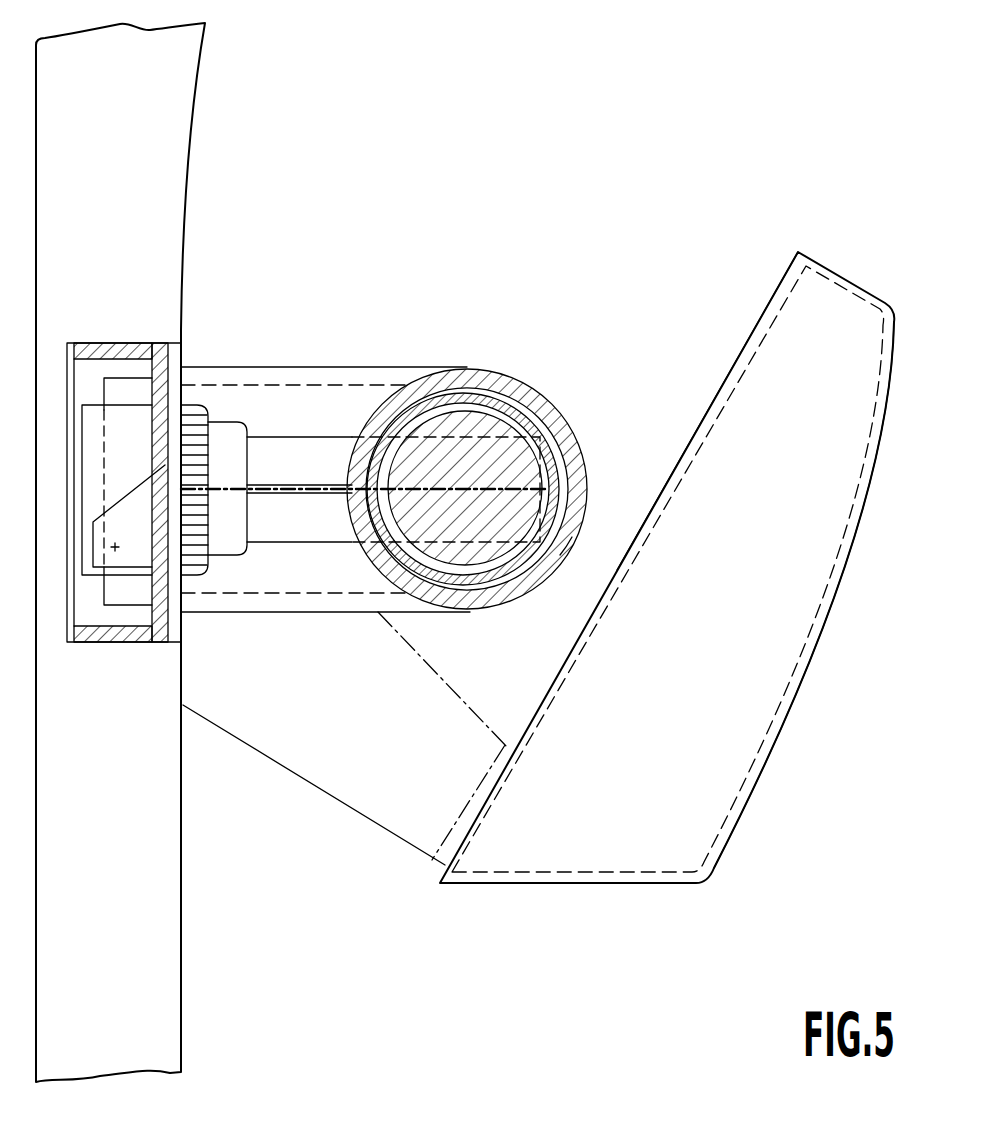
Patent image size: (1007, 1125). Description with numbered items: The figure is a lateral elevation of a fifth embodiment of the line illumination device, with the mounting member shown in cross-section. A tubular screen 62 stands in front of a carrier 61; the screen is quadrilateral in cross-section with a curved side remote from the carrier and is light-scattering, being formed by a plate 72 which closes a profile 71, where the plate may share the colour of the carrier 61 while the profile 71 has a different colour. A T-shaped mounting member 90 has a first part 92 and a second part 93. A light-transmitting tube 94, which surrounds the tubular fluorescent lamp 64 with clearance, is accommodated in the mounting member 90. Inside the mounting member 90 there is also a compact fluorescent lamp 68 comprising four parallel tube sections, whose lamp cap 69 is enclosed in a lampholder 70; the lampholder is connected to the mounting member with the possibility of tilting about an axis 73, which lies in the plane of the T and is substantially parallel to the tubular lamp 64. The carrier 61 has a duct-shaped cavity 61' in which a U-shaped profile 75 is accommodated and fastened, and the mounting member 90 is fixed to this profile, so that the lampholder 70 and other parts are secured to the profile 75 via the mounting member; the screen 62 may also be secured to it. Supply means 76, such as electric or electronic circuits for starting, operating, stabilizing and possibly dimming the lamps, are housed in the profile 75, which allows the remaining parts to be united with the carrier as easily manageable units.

The carrier 61 is at (138, 552).
The duct-shaped cavity 61' is at (111, 513).
The tubular screen 62 is at (830, 633).
The tubular fluorescent lamp 64 is at (520, 410).
The compact fluorescent lamp 68 is at (298, 458).
The lamp cap 69 is at (233, 445).
The lampholder 70 is at (193, 414).
The profile 71 is at (846, 563).
The plate 72 is at (749, 340).
The axis 73 is at (118, 546).
The profile 75 is at (158, 633).
The supply means 76 is at (113, 376).
The mounting member 90 is at (356, 378).
The first part 92 is at (305, 378).
The second part 93 is at (563, 544).
The light-transmitting tube 94 is at (460, 394).